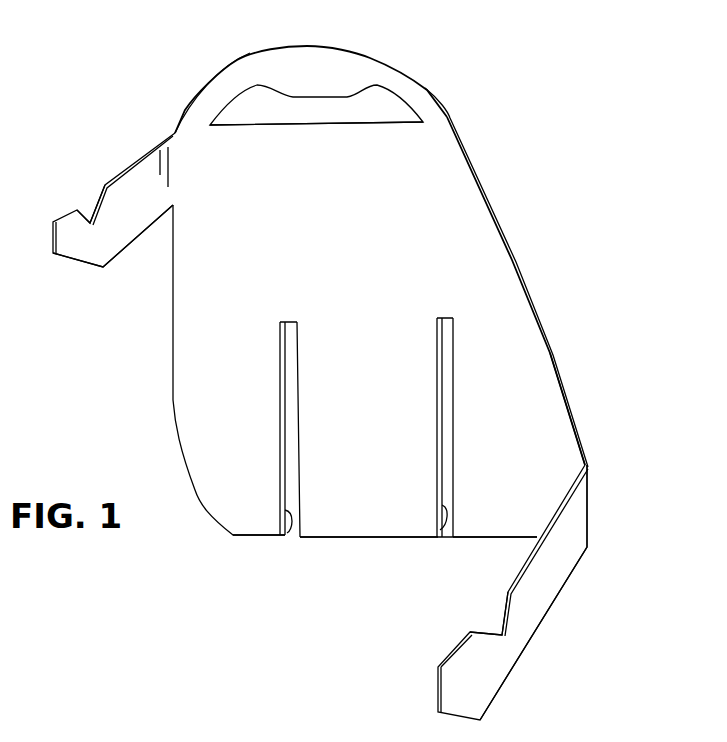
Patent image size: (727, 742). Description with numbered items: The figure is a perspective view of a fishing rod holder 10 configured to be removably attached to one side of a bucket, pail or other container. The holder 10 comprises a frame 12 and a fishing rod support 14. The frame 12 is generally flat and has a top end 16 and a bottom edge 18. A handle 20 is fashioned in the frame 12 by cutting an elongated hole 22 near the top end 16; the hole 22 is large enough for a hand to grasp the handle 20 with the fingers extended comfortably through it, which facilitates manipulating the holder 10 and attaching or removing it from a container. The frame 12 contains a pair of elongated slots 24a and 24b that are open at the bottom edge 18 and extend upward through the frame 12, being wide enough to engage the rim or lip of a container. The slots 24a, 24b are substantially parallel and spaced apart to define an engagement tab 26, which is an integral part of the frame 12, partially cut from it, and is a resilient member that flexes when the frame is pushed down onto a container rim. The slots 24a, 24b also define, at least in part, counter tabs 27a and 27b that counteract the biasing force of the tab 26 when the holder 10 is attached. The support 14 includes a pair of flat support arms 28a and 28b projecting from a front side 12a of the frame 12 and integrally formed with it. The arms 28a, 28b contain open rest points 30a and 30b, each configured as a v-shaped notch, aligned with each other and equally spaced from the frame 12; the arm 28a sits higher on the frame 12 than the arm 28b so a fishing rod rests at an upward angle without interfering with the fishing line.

The fishing rod holder 10 is at (510, 82).
The frame 12 is at (500, 213).
The front side 12a is at (444, 238).
The fishing rod support 14 is at (153, 142).
The top end 16 is at (373, 58).
The bottom edge 18 is at (330, 537).
The handle 20 is at (277, 70).
The elongated hole 22 is at (353, 127).
The elongated slot 24a is at (287, 533).
The elongated slot 24b is at (440, 520).
The engagement tab 26 is at (373, 419).
The counter tab 27a is at (256, 434).
The counter tab 27b is at (524, 429).
The support arm 28a is at (135, 218).
The support arm 28b is at (578, 523).
The rest point 30a is at (97, 195).
The rest point 30b is at (498, 610).